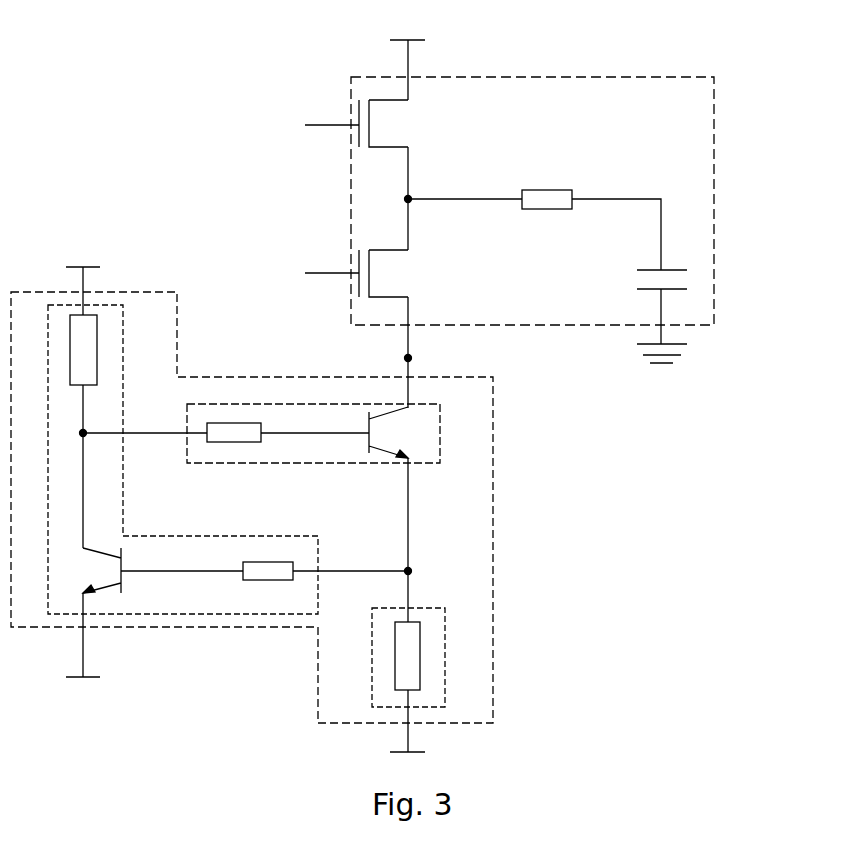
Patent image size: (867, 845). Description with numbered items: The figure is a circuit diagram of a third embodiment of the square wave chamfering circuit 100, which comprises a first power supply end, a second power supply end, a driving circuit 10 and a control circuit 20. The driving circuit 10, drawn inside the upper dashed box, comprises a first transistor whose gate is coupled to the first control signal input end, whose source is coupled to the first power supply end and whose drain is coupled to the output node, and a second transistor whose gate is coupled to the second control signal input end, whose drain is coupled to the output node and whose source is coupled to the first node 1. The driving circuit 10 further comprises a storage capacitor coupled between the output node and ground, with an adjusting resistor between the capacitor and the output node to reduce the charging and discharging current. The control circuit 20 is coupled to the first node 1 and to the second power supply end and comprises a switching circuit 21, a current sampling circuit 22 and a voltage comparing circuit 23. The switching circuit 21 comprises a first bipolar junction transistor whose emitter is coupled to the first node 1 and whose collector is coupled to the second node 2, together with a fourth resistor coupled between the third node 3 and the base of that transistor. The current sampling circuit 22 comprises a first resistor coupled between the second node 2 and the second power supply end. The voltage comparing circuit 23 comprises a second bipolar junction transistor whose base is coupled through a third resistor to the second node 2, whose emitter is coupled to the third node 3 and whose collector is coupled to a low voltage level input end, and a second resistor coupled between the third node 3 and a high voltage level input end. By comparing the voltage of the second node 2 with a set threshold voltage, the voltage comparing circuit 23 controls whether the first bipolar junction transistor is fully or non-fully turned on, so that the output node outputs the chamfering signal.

The square wave chamfering circuit 100 is at (503, 52).
The driving circuit 10 is at (716, 201).
The control circuit 20 is at (493, 504).
The switching circuit 21 is at (330, 403).
The current sampling circuit 22 is at (440, 609).
The voltage comparing circuit 23 is at (200, 614).
The first node 1 is at (398, 358).
The second node 2 is at (401, 561).
The third node 3 is at (74, 433).